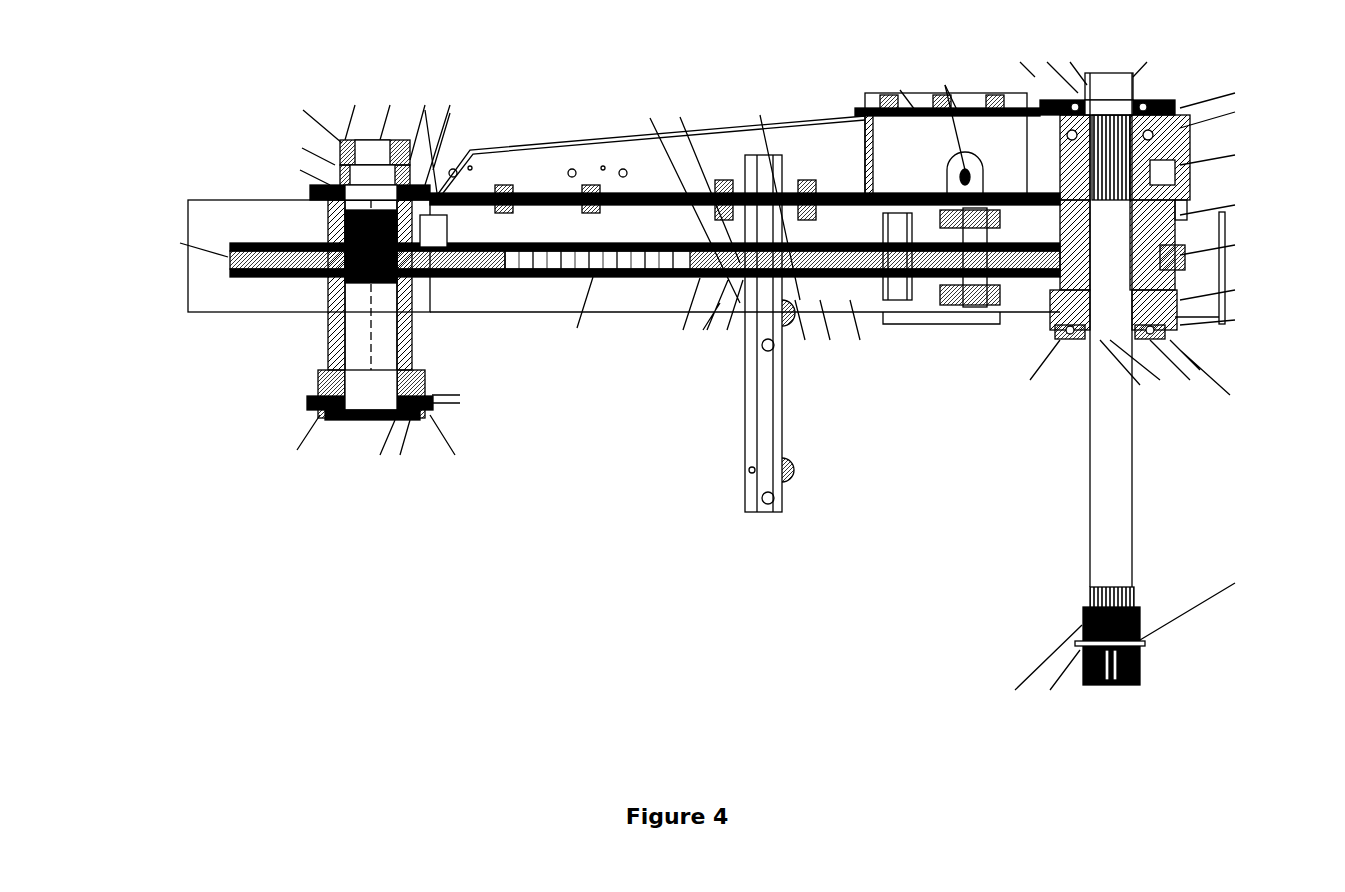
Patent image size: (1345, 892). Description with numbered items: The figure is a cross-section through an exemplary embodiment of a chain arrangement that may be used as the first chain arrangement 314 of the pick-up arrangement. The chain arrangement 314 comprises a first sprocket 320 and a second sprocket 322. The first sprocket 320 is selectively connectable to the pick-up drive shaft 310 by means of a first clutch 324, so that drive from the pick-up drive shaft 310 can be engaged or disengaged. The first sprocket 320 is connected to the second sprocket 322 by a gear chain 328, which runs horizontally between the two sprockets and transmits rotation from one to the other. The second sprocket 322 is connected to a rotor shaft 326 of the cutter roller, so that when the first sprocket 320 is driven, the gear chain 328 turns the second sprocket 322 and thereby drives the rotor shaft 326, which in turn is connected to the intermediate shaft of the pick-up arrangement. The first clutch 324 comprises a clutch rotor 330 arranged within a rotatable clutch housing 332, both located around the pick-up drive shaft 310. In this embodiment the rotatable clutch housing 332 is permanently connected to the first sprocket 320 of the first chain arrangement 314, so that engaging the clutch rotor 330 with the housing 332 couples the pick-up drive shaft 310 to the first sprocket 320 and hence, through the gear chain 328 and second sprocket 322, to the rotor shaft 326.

The first chain arrangement 314 is at (186, 69).
The pick-up drive shaft 310 is at (1112, 453).
The first sprocket 320 is at (1140, 248).
The second sprocket 322 is at (443, 260).
The first clutch 324 is at (1200, 165).
The rotor shaft 326 is at (333, 334).
The gear chain 328 is at (612, 275).
The clutch rotor 330 is at (1152, 155).
The rotatable clutch housing 332 is at (1180, 195).